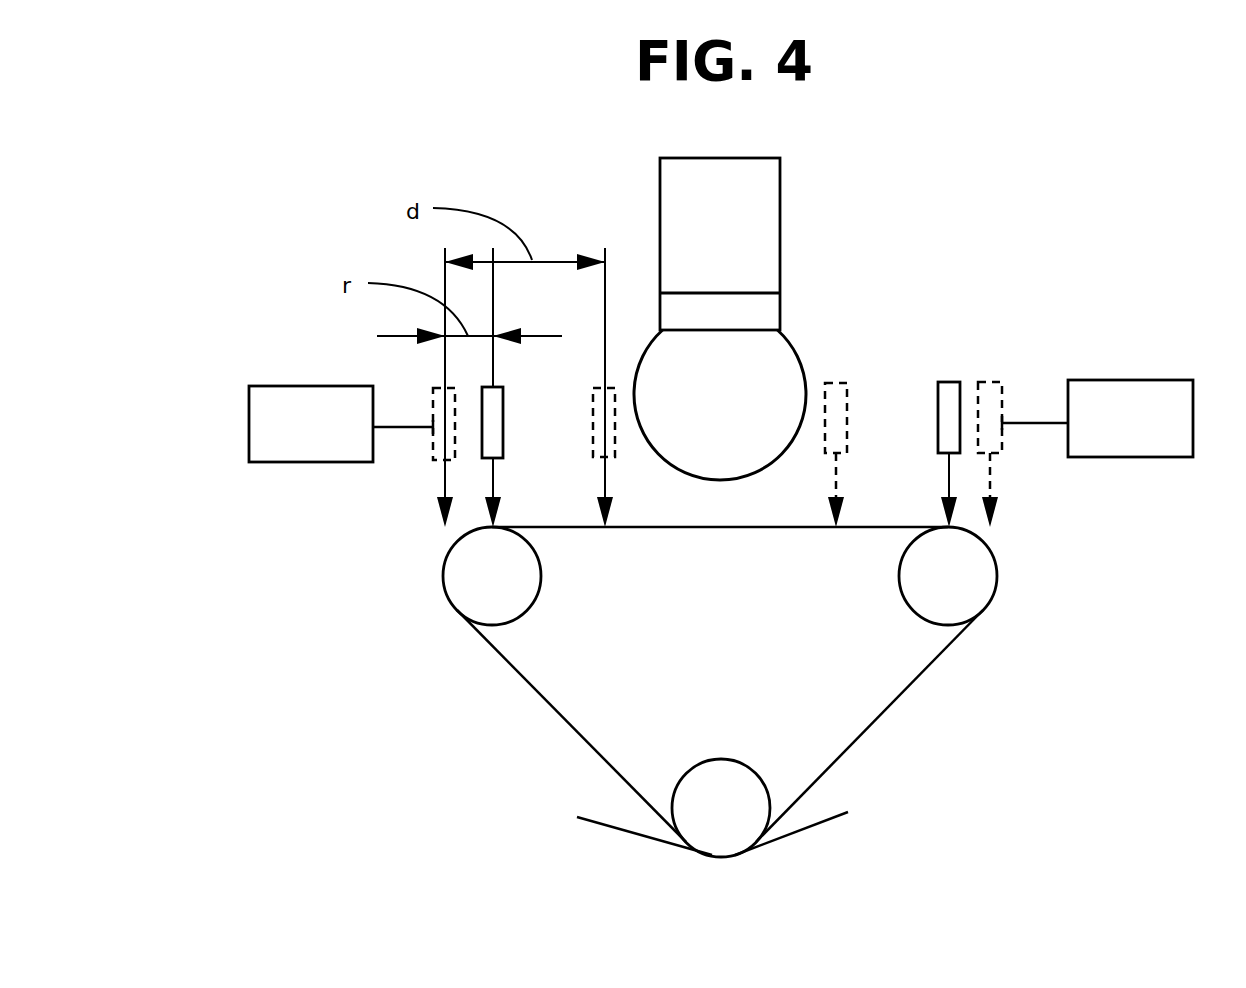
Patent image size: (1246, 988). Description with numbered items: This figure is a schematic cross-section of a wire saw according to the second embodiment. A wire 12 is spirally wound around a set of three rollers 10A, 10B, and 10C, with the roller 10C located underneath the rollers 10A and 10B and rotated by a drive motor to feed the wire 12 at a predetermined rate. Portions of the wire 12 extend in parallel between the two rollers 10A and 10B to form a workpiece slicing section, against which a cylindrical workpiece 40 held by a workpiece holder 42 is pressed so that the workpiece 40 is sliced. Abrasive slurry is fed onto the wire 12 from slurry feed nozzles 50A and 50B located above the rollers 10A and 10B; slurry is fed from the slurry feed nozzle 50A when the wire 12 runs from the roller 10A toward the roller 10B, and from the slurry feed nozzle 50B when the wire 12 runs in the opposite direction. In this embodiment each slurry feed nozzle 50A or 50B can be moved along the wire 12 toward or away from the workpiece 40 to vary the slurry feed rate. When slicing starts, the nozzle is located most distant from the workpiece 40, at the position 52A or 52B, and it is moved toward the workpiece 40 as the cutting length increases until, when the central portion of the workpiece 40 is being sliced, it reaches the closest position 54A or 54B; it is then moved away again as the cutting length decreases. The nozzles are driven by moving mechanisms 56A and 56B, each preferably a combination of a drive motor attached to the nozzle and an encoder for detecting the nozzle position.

The roller 10A is at (541, 589).
The roller 10B is at (900, 589).
The roller 10C is at (729, 760).
The wire 12 is at (909, 686).
The workpiece 40 is at (797, 350).
The workpiece holder 42 is at (780, 193).
The slurry feed nozzle 50A is at (482, 443).
The slurry feed nozzle 50B is at (960, 442).
The position 52A is at (432, 442).
The position 52B is at (1002, 403).
The position 54A is at (595, 390).
The position 54B is at (847, 403).
The moving mechanism 56A is at (285, 386).
The moving mechanism 56B is at (1112, 378).